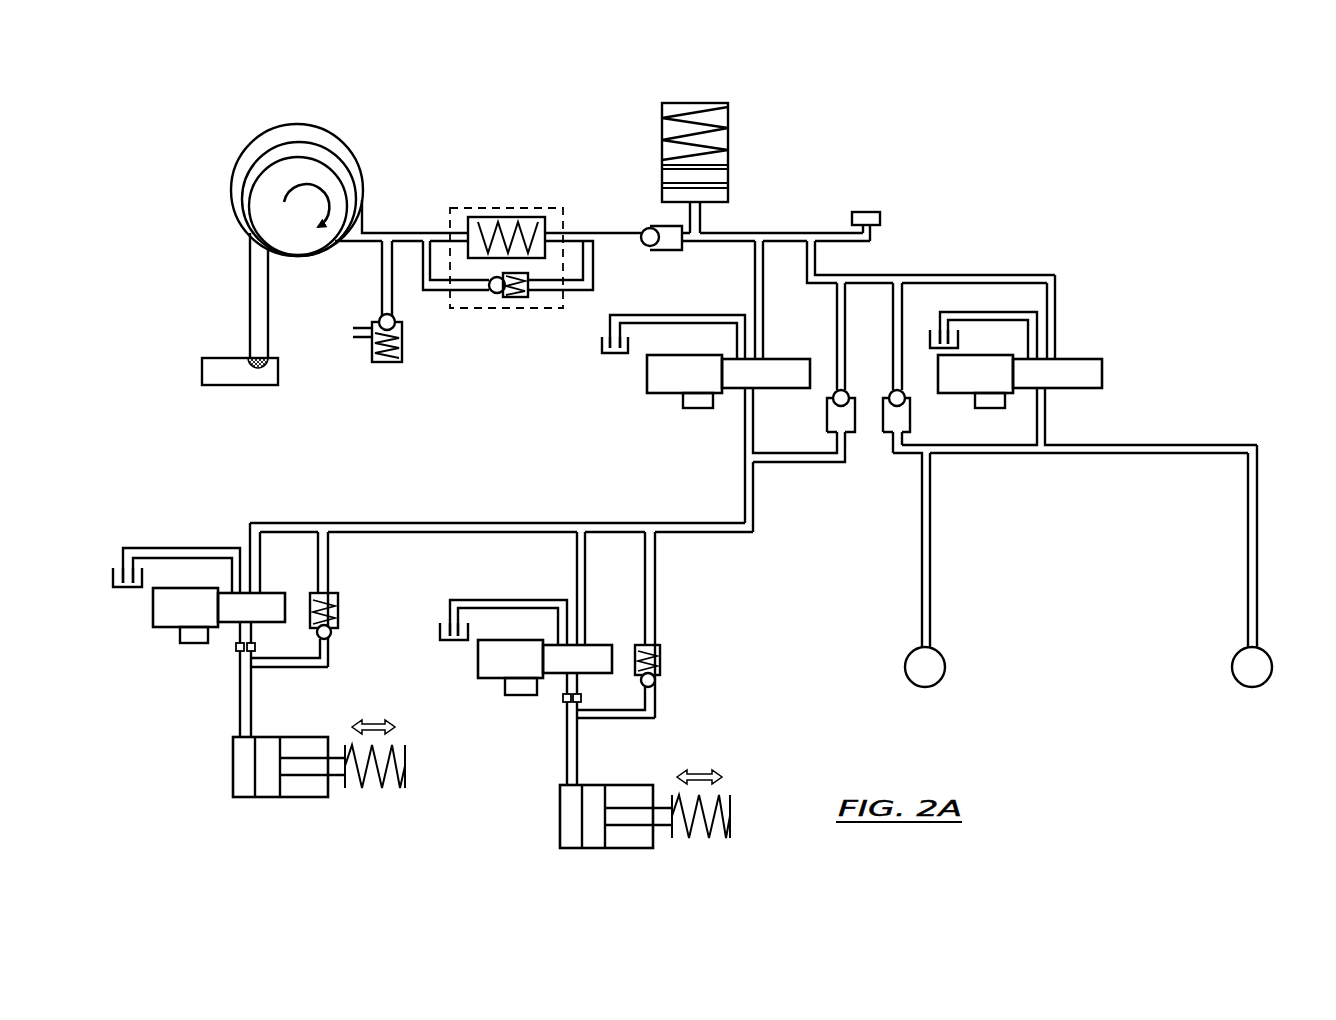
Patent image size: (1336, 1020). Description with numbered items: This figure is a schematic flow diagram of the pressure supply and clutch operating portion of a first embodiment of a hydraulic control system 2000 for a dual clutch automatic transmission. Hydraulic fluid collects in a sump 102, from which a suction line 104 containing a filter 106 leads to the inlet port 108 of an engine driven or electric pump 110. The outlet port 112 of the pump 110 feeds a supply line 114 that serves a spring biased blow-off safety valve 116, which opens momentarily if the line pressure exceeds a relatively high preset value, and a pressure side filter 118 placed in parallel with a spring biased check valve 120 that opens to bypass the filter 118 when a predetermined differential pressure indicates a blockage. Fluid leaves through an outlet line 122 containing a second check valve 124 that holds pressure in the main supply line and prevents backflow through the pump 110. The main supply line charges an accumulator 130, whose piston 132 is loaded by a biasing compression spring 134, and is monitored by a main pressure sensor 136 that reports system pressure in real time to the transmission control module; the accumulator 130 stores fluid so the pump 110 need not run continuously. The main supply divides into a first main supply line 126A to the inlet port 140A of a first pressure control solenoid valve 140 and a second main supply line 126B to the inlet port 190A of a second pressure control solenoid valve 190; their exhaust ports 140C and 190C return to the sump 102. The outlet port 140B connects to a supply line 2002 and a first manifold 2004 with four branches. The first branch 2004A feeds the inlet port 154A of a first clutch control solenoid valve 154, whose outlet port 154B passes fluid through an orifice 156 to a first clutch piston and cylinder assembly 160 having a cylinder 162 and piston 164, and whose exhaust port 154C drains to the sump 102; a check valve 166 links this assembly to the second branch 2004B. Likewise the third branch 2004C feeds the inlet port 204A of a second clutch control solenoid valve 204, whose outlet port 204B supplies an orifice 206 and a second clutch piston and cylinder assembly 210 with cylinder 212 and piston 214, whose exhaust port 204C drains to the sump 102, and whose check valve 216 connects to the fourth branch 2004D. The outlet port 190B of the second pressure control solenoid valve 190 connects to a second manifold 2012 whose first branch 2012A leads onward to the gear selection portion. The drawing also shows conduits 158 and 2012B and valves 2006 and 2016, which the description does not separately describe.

The hydraulic control system 2000 is at (960, 162).
The sump 102 is at (232, 380).
The suction line 104 is at (268, 283).
The filter 106 is at (250, 345).
The inlet port 108 is at (258, 245).
The pump 110 is at (318, 130).
The outlet port 112 is at (366, 231).
The supply line 114 is at (424, 233).
The blow-off safety valve 116 is at (405, 328).
The pressure side filter 118 is at (502, 225).
The check valve 120 is at (511, 300).
The outlet line 122 is at (601, 233).
The second check valve 124 is at (665, 245).
The first main supply line 126A is at (776, 233).
The second main supply line 126B is at (930, 275).
The accumulator 130 is at (733, 140).
The piston 132 is at (705, 183).
The biasing compression spring 134 is at (680, 143).
The main pressure sensor 136 is at (861, 212).
The first pressure control solenoid valve 140 is at (660, 413).
The inlet port 140A is at (765, 357).
The outlet port 140B is at (753, 392).
The exhaust port 140C is at (738, 355).
The supply line 2002 is at (745, 466).
The check valve 2006 is at (851, 440).
The check valve 2016 is at (910, 420).
The second pressure control solenoid valve 190 is at (1097, 304).
The inlet port 190A is at (1053, 357).
The outlet port 190B is at (1045, 392).
The exhaust port 190C is at (1030, 356).
The second manifold 2012 is at (1192, 445).
The first branch 2012A is at (918, 560).
The conduit branch to GZ 2012B is at (1247, 585).
The first manifold 2004 is at (430, 532).
The first branch 2004A is at (248, 525).
The second branch 2004B is at (330, 540).
The third branch 2004C is at (575, 540).
The fourth branch 2004D is at (656, 540).
The first clutch control solenoid valve 154 is at (160, 656).
The inlet port 154A is at (253, 591).
The outlet port 154B is at (257, 643).
The exhaust port 154C is at (233, 590).
The orifice 156 is at (235, 650).
The conduit 158 is at (240, 695).
The first clutch piston and cylinder assembly 160 is at (228, 782).
The cylinder 162 is at (310, 800).
The piston 164 is at (265, 790).
The check valve 166 is at (331, 626).
The second clutch control solenoid valve 204 is at (490, 705).
The inlet port 204A is at (580, 643).
The outlet port 204B is at (584, 692).
The exhaust port 204C is at (558, 643).
The orifice 206 is at (563, 703).
The second clutch piston and cylinder assembly 210 is at (540, 796).
The cylinder 212 is at (615, 785).
The piston 214 is at (590, 818).
The check valve 216 is at (660, 676).